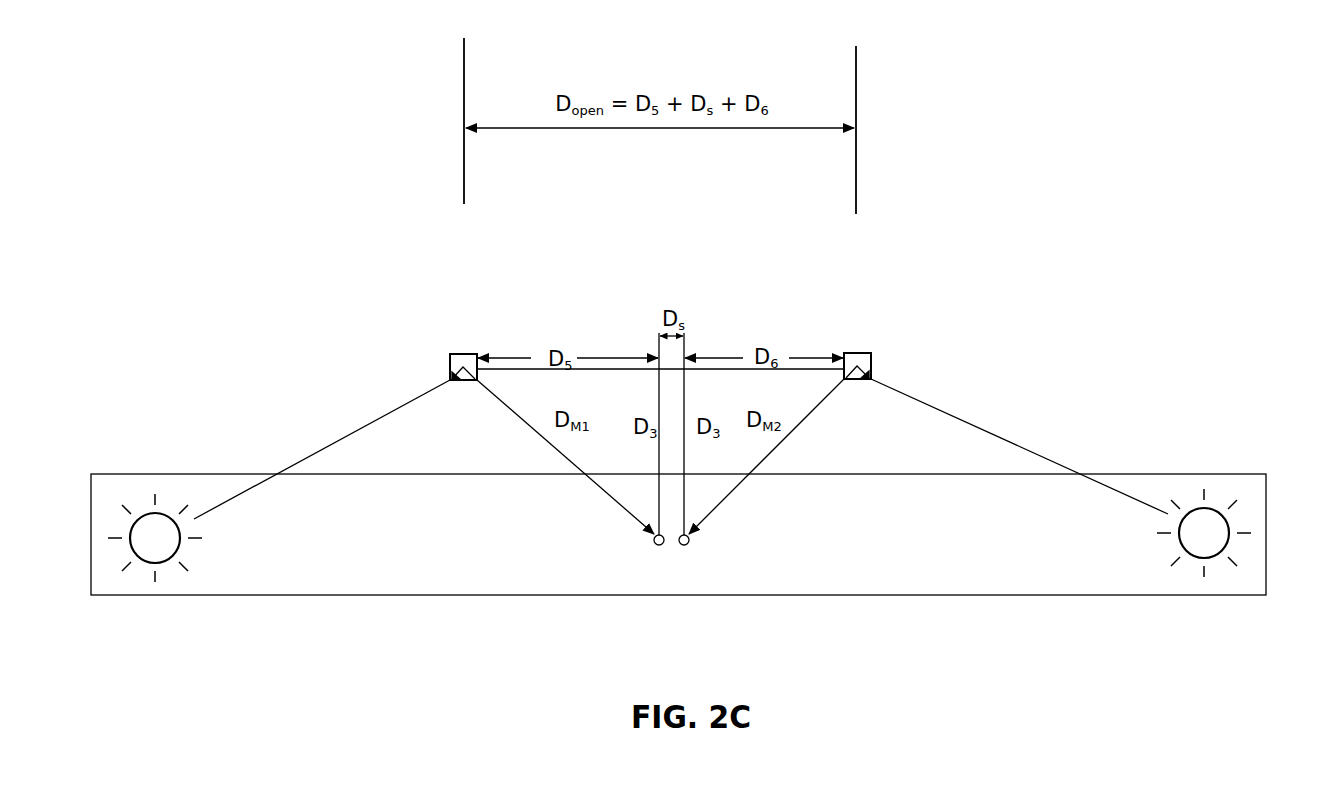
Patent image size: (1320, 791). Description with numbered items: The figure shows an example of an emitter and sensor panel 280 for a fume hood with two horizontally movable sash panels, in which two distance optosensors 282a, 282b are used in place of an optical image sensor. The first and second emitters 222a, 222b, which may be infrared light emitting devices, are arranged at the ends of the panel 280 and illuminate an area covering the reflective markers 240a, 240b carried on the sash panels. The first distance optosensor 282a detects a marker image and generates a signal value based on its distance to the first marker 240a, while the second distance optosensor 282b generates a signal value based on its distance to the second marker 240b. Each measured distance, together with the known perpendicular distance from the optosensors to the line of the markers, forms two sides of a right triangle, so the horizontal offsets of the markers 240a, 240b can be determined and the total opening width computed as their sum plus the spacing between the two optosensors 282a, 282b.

The first emitter 222a is at (155, 503).
The second emitter 222b is at (1200, 500).
The first marker 240a is at (455, 346).
The second marker 240b is at (853, 345).
The emitter and sensor panel 280 is at (941, 527).
The first distance optosensor 282a is at (650, 545).
The second distance optosensor 282b is at (682, 552).